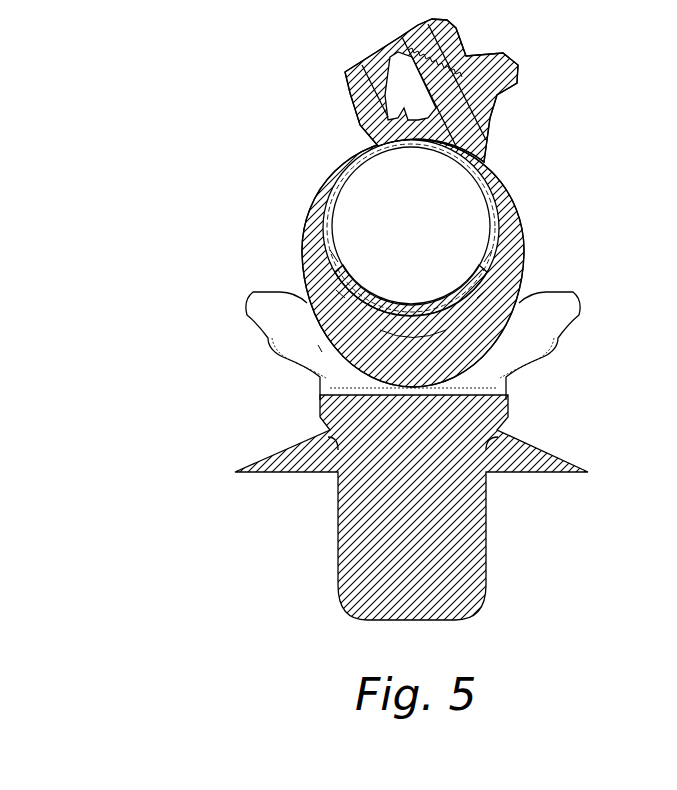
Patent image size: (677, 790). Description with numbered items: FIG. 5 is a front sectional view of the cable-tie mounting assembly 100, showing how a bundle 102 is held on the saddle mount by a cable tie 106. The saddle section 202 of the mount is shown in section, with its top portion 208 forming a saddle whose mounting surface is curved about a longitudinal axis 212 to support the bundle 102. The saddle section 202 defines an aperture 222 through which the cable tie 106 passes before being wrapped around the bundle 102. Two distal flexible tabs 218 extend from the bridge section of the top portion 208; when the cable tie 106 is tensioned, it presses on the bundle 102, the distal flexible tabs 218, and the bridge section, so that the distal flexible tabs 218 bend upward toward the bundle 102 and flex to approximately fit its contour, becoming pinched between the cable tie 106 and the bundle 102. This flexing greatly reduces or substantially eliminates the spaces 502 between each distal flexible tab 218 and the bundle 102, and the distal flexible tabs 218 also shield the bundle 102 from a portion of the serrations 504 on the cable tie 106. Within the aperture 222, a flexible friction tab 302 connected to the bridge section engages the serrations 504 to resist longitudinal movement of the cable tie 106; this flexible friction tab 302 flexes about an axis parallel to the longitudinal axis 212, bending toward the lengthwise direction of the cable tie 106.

The cable-tie mounting assembly 100 is at (189, 94).
The bundle 102 is at (452, 163).
The cable tie 106 is at (305, 258).
The spaces 502 is at (338, 222).
The distal flexible tabs 218 is at (347, 270).
The serrations 504 is at (362, 343).
The top portion 208 is at (570, 302).
The saddle section 202 is at (146, 290).
The aperture 222 is at (301, 339).
The flexible friction tab 302 is at (417, 327).
The longitudinal axis 212 is at (413, 327).